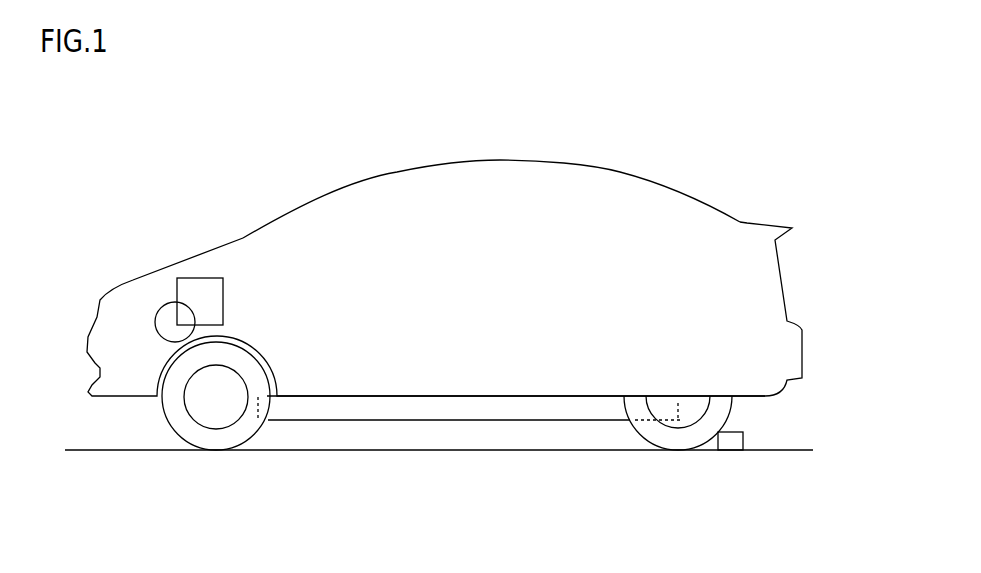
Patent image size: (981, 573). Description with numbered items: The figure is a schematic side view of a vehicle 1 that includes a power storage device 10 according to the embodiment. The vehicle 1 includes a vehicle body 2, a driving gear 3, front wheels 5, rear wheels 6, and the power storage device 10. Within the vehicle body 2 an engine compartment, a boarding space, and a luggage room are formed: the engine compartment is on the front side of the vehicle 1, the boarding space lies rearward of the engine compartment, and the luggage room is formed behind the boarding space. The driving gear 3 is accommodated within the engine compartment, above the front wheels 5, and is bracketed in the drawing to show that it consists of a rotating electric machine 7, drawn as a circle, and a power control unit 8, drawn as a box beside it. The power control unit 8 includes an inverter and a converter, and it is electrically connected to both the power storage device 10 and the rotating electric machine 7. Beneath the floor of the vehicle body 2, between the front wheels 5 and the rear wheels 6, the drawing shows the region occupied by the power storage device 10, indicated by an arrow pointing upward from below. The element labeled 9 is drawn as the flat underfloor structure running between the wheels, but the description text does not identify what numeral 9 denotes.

The vehicle 1 is at (666, 125).
The vehicle body 2 is at (503, 160).
The driving gear 3 is at (152, 206).
The front wheels 5 is at (220, 438).
The rear wheels 6 is at (678, 437).
The rotating electric machine 7 is at (167, 302).
The power control unit 8 is at (203, 278).
The battery pack 9 is at (487, 398).
The power storage device 10 is at (417, 445).